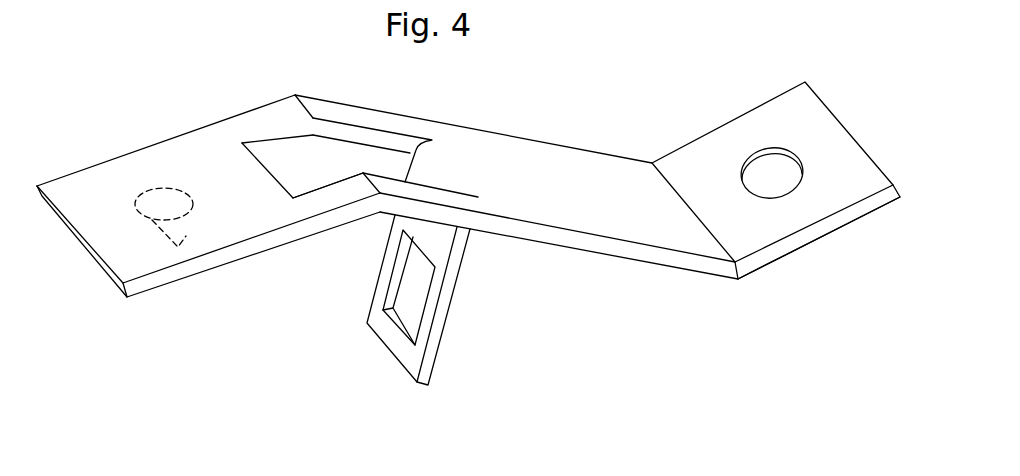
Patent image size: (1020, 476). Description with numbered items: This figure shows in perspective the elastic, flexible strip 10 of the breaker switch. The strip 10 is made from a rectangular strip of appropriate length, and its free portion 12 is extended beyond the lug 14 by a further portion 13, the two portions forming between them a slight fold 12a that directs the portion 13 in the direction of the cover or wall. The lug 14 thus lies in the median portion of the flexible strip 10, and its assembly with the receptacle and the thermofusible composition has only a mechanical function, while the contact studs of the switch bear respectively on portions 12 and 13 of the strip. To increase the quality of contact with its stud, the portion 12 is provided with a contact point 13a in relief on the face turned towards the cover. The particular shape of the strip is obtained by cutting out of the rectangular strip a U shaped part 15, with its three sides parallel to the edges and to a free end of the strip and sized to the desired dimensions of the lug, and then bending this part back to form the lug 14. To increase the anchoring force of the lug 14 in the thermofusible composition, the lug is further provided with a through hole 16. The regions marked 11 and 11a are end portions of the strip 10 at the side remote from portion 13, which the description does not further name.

The flexible strip 10 is at (535, 132).
The mounting portion 11 is at (777, 122).
The edge of mounting portion 11a is at (722, 248).
The free portion 12 is at (537, 200).
The fold 12a is at (300, 95).
The extension portion 13 is at (205, 150).
The contact point 13a is at (162, 197).
The lug 14 is at (440, 352).
The U shaped part 15 is at (298, 180).
The through hole 16 is at (410, 294).